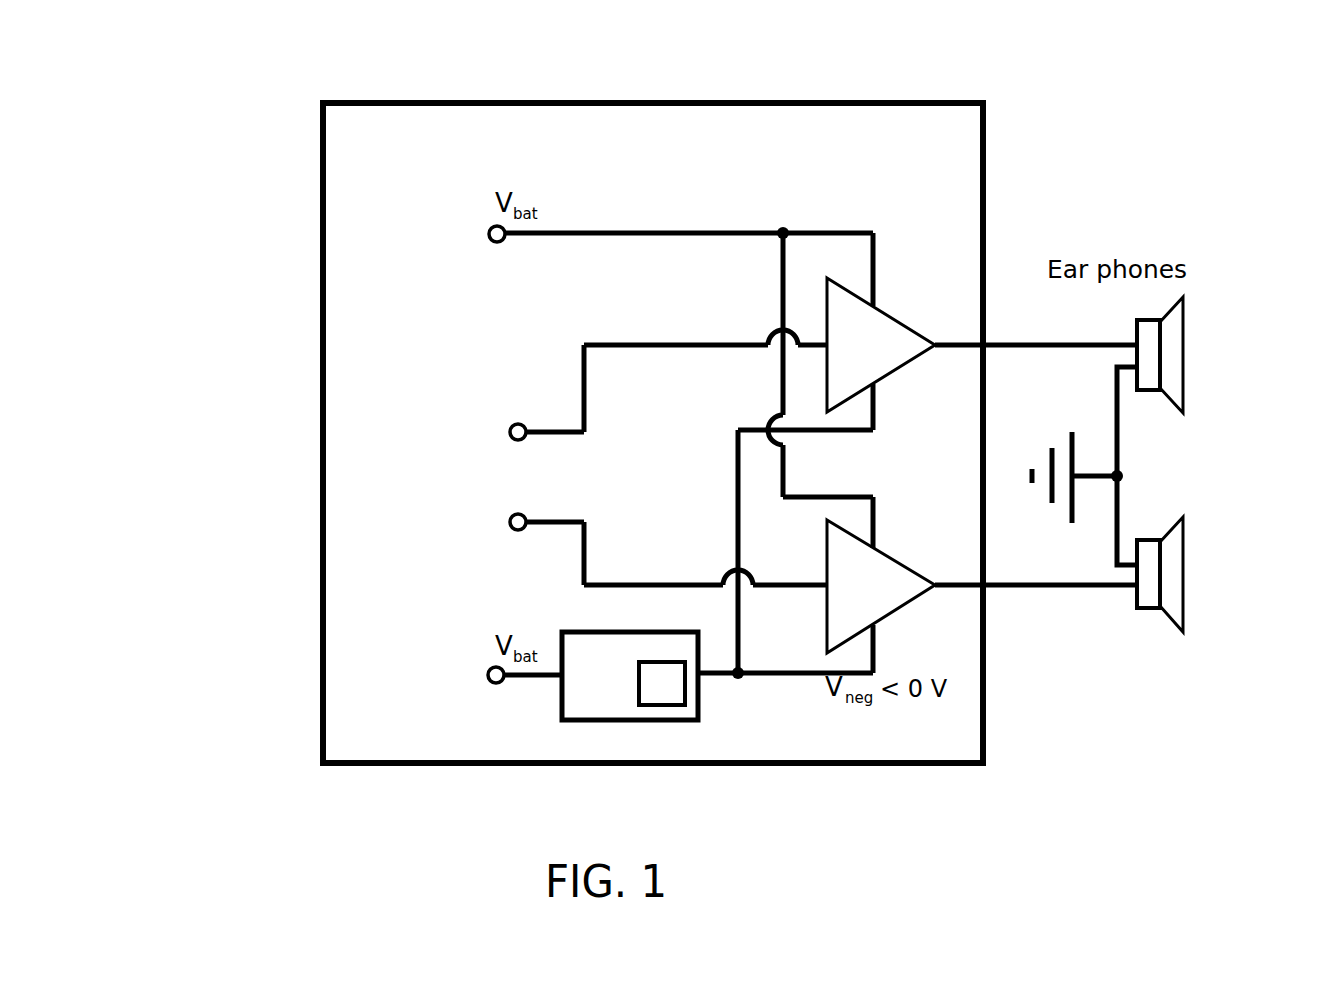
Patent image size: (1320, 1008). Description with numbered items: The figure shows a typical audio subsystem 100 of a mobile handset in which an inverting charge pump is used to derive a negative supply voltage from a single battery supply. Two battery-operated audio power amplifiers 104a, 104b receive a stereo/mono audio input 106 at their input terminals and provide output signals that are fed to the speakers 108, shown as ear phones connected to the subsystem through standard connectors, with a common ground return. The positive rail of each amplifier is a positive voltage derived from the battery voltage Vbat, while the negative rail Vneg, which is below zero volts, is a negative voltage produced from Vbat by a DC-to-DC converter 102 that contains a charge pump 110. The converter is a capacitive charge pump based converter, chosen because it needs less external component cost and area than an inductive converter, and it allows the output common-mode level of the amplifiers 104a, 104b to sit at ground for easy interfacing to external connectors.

The audio subsystem 100 is at (248, 117).
The DC-to-DC converter 102 is at (572, 720).
The audio power amplifier 104a is at (903, 322).
The audio power amplifier 104b is at (905, 610).
The stereo/mono audio input 106 is at (410, 452).
The speakers 108 is at (1183, 392).
The inverting charge pump 110 is at (660, 705).